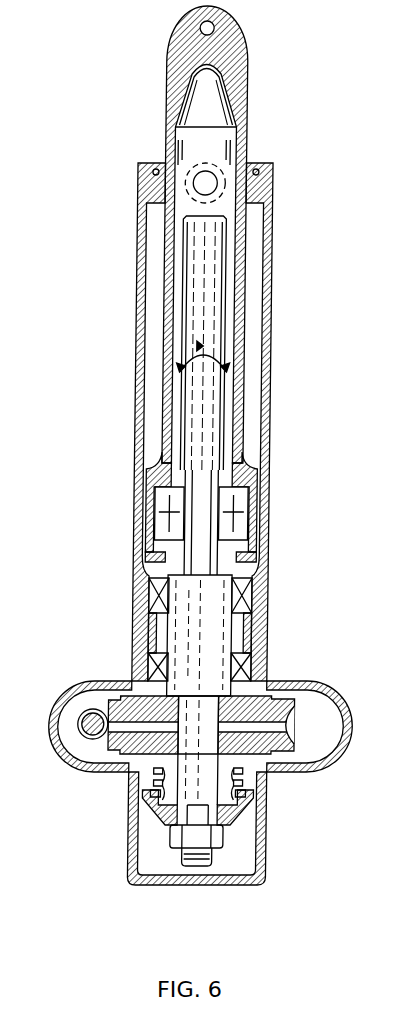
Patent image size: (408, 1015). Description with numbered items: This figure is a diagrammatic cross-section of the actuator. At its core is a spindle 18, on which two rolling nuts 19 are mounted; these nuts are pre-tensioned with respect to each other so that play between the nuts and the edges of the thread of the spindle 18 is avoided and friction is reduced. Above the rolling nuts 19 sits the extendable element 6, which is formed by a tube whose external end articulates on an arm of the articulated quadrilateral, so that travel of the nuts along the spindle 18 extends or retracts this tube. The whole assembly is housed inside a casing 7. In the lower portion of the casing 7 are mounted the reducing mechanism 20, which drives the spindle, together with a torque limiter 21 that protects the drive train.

The extendable element 6 is at (247, 143).
The casing 7 is at (276, 330).
The spindle 18 is at (215, 267).
The rolling nuts 19 is at (263, 520).
The reducing mechanism 20 is at (85, 703).
The torque limiter 21 is at (261, 763).